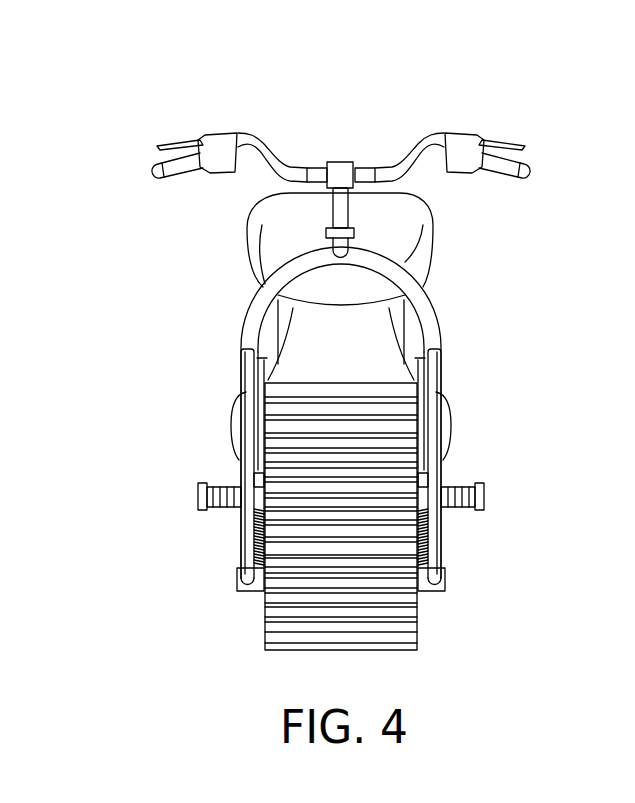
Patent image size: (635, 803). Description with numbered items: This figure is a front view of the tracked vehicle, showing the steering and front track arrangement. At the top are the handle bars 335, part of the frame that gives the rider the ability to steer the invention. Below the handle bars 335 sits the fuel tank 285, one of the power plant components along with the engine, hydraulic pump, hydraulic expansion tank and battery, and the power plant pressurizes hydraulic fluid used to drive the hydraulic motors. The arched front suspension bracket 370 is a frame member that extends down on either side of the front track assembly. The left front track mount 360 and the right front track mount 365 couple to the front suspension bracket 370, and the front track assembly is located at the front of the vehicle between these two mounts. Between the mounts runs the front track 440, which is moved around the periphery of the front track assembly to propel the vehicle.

The handle bars 335 is at (265, 148).
The fuel tank 285 is at (263, 228).
The front suspension bracket 370 is at (420, 300).
The right front track mount 365 is at (245, 462).
The left front track mount 360 is at (432, 472).
The front track 440 is at (383, 635).